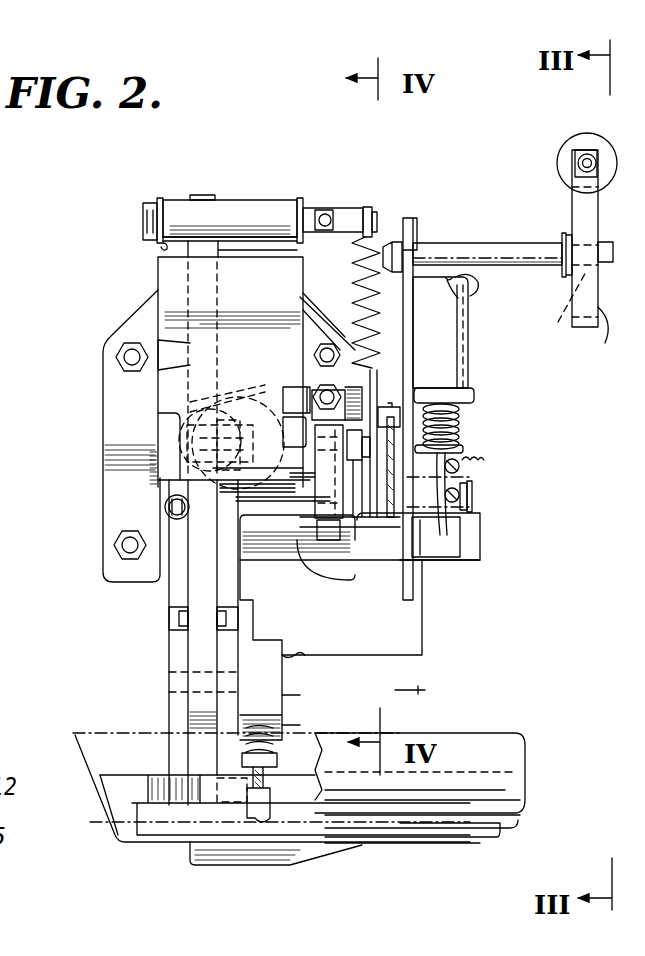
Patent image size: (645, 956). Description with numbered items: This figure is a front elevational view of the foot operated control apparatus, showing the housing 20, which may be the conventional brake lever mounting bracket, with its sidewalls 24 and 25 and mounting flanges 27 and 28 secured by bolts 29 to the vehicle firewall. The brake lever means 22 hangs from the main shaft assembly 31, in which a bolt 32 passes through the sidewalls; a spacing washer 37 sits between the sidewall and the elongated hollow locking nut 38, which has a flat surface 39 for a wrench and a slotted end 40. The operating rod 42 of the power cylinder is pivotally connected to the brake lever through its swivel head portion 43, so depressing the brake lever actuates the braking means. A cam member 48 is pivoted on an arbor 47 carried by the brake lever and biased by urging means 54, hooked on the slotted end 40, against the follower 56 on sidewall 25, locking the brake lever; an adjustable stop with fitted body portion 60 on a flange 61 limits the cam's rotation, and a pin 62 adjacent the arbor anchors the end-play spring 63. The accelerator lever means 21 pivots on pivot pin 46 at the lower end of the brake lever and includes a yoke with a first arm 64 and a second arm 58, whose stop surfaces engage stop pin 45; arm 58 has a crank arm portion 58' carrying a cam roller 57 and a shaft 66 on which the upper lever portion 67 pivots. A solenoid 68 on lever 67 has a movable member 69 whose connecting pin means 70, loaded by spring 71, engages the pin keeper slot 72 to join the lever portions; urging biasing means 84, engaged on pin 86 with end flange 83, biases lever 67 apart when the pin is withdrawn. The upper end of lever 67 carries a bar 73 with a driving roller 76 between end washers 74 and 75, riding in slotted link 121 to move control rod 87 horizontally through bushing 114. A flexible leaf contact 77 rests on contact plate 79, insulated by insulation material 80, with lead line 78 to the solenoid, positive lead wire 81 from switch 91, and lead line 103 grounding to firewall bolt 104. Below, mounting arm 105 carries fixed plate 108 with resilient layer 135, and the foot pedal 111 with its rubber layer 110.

The housing 20 is at (158, 283).
The accelerator lever means 21 is at (163, 684).
The brake lever means 22 is at (215, 595).
The sidewall 24 is at (162, 248).
The sidewall 25 is at (290, 245).
The mounting flange 27 is at (150, 582).
The mounting flange 28 is at (340, 550).
The bolts 29 is at (116, 545).
The main shaft assembly 31 is at (205, 180).
The bolt 32 is at (150, 203).
The spacing washer 37 is at (305, 245).
The locking nut 38 is at (350, 207).
The flat surface 39 is at (330, 214).
The slotted end 40 is at (372, 212).
The operating rod 42 is at (223, 433).
The swivel head portion 43 is at (163, 412).
The stop pin 45 is at (169, 610).
The pivot pin 46 is at (175, 668).
The arbor 47 is at (290, 482).
The cam member 48 is at (300, 502).
The urging means 54 is at (345, 300).
The follower 56 is at (278, 425).
The cam roller 57 is at (320, 560).
The second arm 58 is at (289, 666).
The crank arm portion 58' is at (297, 627).
The fitted body portion 60 is at (305, 350).
The flange 61 is at (280, 393).
The pin 62 is at (203, 642).
The spring 63 is at (165, 505).
The first arm 64 is at (175, 714).
The shaft 66 is at (475, 500).
The upper lever portion 67 is at (410, 327).
The solenoid 68 is at (470, 345).
The movable member 69 is at (460, 410).
The connecting pin means 70 is at (465, 478).
The spring 71 is at (455, 447).
The pin keeper slot 72 is at (440, 480).
The horizontally extending bar 73 is at (485, 262).
The end washer 74 is at (568, 233).
The end washer 75 is at (607, 242).
The driving roller 76 is at (565, 310).
The flexible leaf contact 77 is at (460, 530).
The lead line 78 is at (485, 460).
The contact plate 79 is at (465, 560).
The insulation material 80 is at (395, 560).
The positive lead wire 81 is at (428, 620).
The end flange 83 is at (370, 540).
The urging biasing means 84 is at (368, 437).
The pin 86 is at (378, 407).
The control rod 87 is at (578, 165).
The electrical switch 91 is at (282, 705).
The lead line 103 is at (480, 280).
The firewall bolt 104 is at (360, 340).
The mounting arm 105 is at (235, 862).
The fixed plate 108 is at (125, 790).
The rubber layer 110 is at (470, 740).
The foot pedal 111 is at (530, 745).
The bushing 114 is at (582, 135).
The slotted link 121 is at (605, 335).
The resilient material layer 135 is at (430, 838).